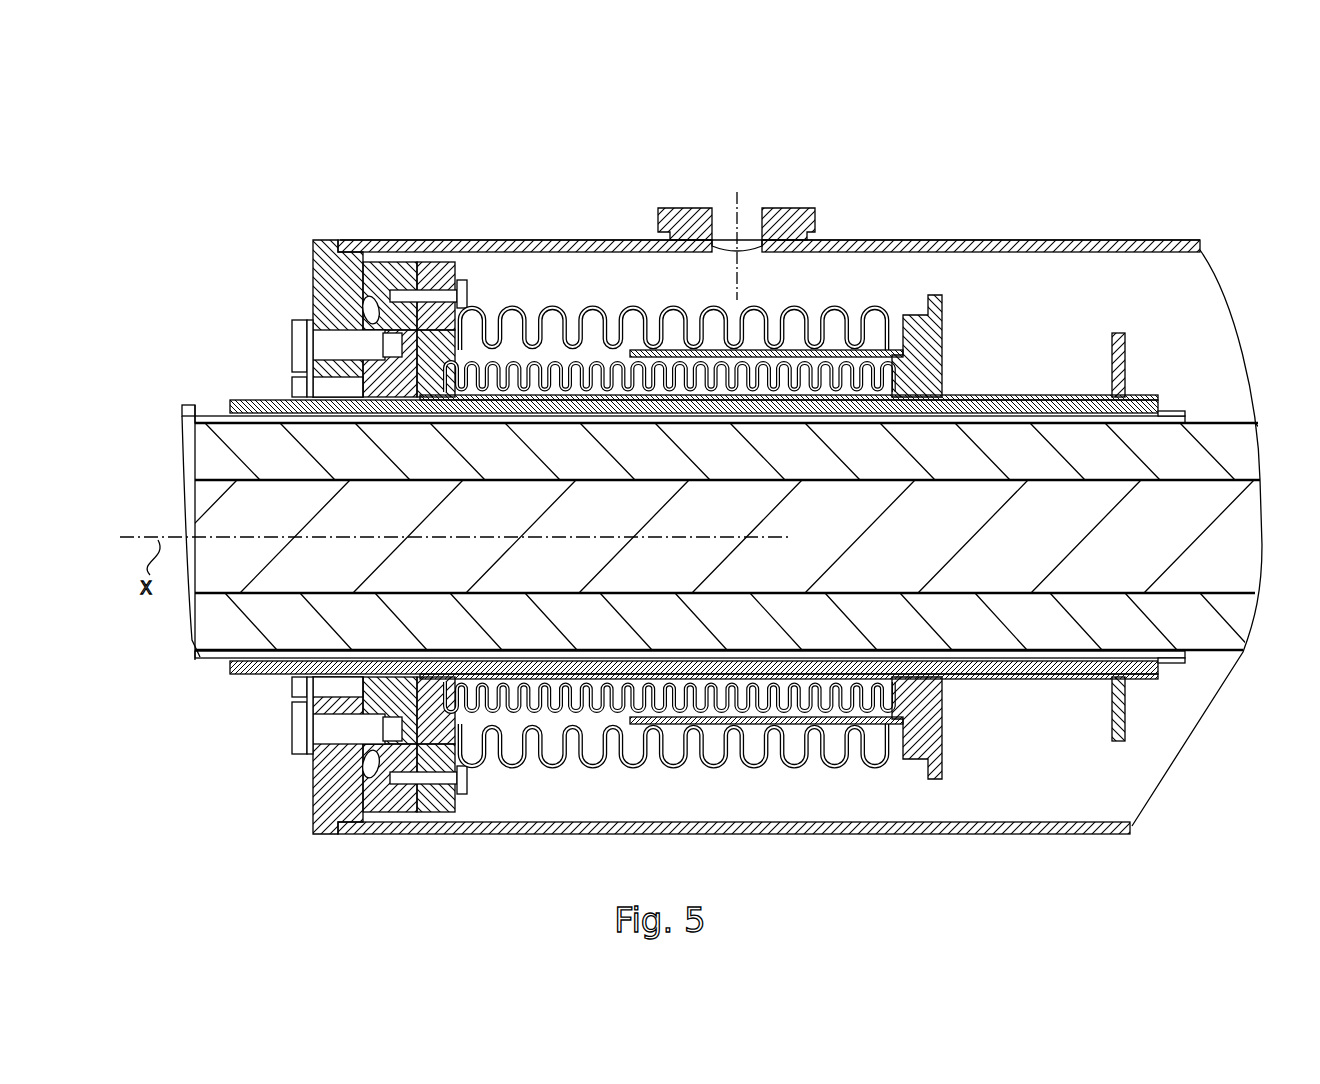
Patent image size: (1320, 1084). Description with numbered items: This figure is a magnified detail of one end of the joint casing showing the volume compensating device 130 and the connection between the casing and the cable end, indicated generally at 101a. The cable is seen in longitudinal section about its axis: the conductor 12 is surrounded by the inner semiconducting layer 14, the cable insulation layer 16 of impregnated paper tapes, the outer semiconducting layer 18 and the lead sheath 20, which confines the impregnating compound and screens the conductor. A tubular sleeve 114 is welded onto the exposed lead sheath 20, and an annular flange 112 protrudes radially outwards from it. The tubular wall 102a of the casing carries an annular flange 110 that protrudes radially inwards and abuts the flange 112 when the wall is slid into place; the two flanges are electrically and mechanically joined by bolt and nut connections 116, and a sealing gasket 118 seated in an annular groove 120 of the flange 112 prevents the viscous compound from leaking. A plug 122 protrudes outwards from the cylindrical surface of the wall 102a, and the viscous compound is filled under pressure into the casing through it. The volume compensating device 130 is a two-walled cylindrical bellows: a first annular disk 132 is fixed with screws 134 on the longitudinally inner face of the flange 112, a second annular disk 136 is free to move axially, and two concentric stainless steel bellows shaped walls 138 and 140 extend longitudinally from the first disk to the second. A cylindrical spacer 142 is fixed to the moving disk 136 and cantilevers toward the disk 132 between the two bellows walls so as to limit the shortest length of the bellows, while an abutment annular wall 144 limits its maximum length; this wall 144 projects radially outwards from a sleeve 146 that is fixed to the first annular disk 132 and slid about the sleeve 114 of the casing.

The seal assembly 101a is at (1096, 176).
The tubular wall 102a is at (888, 244).
The conductor 12 is at (228, 512).
The inner semiconducting layer 14 is at (222, 488).
The cable insulation layer 16 is at (220, 455).
The outer semiconducting layer 18 is at (200, 432).
The lead sheath 20 is at (1177, 413).
The annular flange 110 is at (363, 306).
The annular flange 112 is at (384, 268).
The tubular sleeve 114 is at (257, 404).
The bolt and nut connection 116 is at (295, 350).
The sealing gasket 118 is at (342, 268).
The annular groove 120 is at (337, 250).
The plug 122 is at (775, 210).
The volume compensating device 130 is at (518, 268).
The first annular disk 132 is at (435, 266).
The screws 134 is at (466, 290).
The second annular disk 136 is at (928, 343).
The bellows shaped wall 138 is at (578, 308).
The bellows shaped wall 140 is at (558, 368).
The cylindrical spacer 142 is at (837, 347).
The abutment annular wall 144 is at (1118, 333).
The sleeve 146 is at (1000, 394).